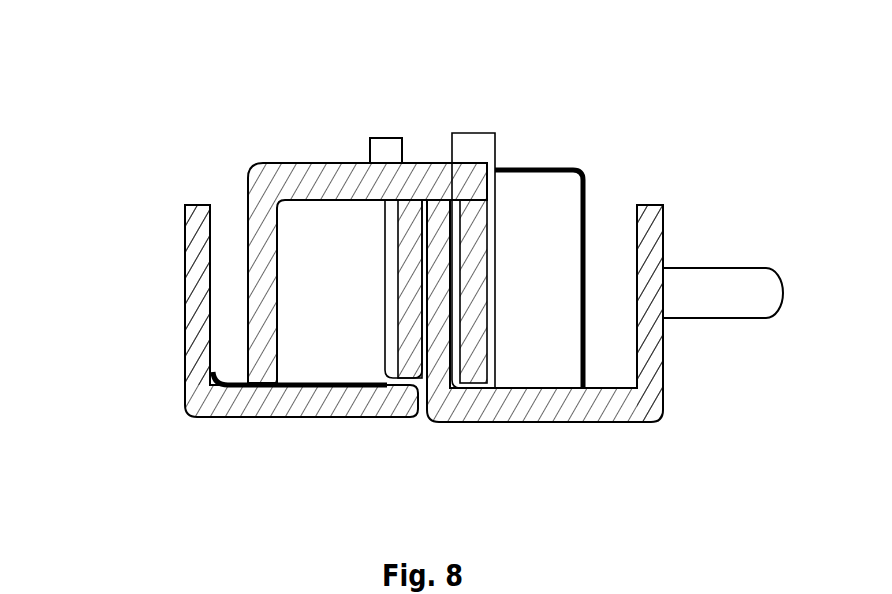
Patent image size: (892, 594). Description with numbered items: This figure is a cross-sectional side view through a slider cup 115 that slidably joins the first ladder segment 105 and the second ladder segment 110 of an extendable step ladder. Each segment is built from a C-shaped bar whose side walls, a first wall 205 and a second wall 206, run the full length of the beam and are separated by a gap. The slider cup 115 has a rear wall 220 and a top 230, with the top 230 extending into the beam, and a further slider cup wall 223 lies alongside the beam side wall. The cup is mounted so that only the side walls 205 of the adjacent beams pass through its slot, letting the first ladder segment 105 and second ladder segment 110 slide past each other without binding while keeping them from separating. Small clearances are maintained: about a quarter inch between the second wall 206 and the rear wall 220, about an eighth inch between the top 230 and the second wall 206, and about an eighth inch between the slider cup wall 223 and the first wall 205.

The first ladder segment 105 is at (190, 238).
The second ladder segment 110 is at (657, 357).
The slider cup 115 is at (287, 163).
The first wall 205 is at (403, 300).
The second wall 206 is at (190, 337).
The rear wall 220 is at (250, 220).
The slider cup wall 223 is at (480, 238).
The top 230 is at (325, 165).